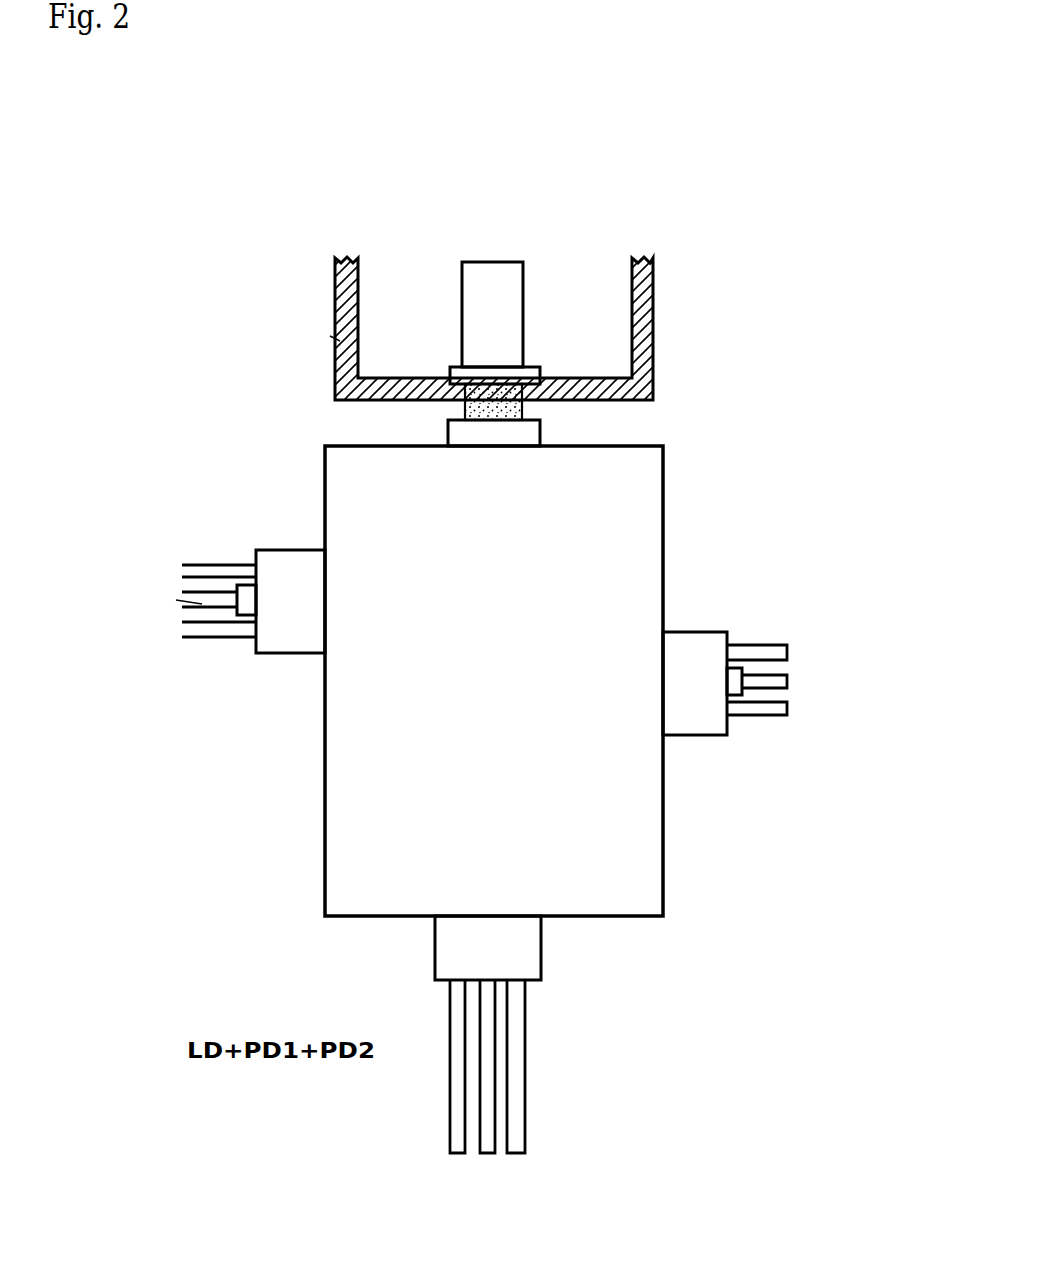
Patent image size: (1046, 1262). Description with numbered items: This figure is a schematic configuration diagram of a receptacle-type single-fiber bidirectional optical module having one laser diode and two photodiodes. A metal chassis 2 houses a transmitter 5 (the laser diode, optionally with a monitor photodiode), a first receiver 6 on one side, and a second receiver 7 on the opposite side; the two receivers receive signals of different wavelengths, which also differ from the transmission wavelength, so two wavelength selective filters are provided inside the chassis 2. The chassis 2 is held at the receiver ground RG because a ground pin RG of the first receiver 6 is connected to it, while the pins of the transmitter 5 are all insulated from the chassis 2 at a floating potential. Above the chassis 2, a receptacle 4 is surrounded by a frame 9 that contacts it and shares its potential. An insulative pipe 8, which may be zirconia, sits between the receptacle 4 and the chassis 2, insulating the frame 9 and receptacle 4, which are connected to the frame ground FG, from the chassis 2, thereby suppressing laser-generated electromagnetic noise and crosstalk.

The chassis 2 is at (494, 681).
The receptacle 4 is at (479, 312).
The transmitter 5 is at (517, 1036).
The first receiver 6 is at (231, 637).
The second receiver 7 is at (808, 717).
The insulative pipe 8 is at (497, 402).
The frame 9 is at (636, 378).